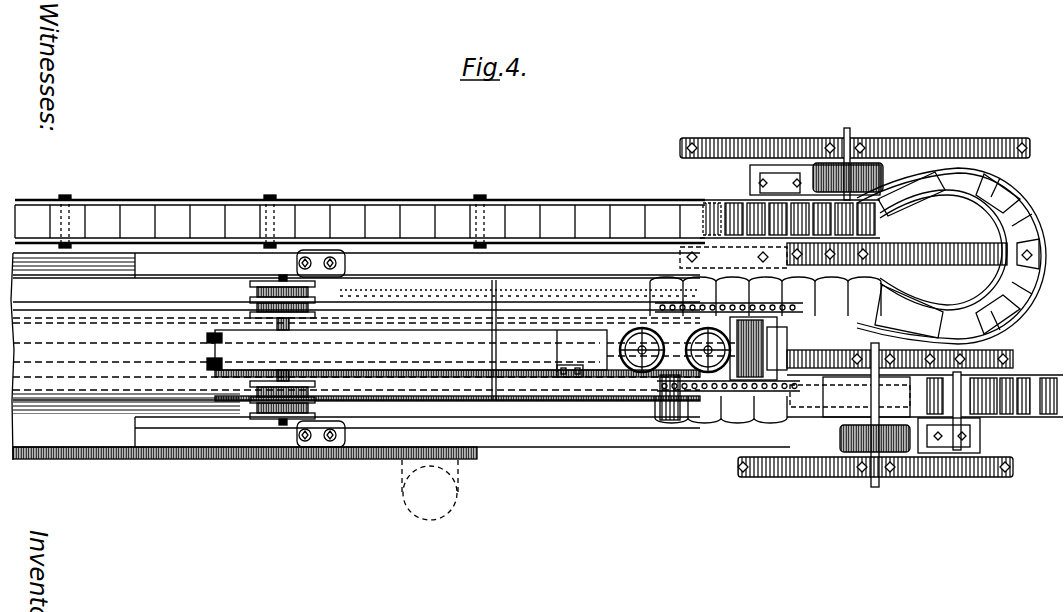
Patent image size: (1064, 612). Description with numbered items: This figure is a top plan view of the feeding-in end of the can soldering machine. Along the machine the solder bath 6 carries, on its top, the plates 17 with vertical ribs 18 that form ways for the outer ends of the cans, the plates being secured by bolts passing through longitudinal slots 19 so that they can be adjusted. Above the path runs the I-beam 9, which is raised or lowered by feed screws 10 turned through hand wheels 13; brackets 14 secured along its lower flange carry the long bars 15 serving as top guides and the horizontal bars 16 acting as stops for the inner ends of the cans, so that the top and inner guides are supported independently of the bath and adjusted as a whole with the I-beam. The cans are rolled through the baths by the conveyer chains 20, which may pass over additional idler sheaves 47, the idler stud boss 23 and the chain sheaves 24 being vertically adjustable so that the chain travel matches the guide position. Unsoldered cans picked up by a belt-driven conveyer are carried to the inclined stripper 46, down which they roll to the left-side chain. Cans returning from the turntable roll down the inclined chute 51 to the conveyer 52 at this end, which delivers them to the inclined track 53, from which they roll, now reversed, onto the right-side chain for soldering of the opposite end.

The solder bath 6 is at (103, 341).
The I-beam 9 is at (411, 351).
The feed screws 10 is at (650, 375).
The hand wheels 13 is at (637, 372).
The brackets 14 is at (573, 377).
The long plates or bars 15 is at (620, 306).
The horizontal plates or bars 16 is at (207, 337).
The plates 17 is at (200, 260).
The vertical ribs 18 is at (420, 272).
The longitudinal slots 19 is at (340, 233).
The conveyer chains 20 is at (655, 305).
The boss 23 is at (765, 347).
The chain sheaves 24 is at (790, 306).
The inclined stripper 46 is at (962, 434).
The additional idler sheaves 47 is at (318, 300).
The inclined chute 51 is at (567, 207).
The conveyer 52 is at (730, 205).
The inclined track 53 is at (1005, 200).